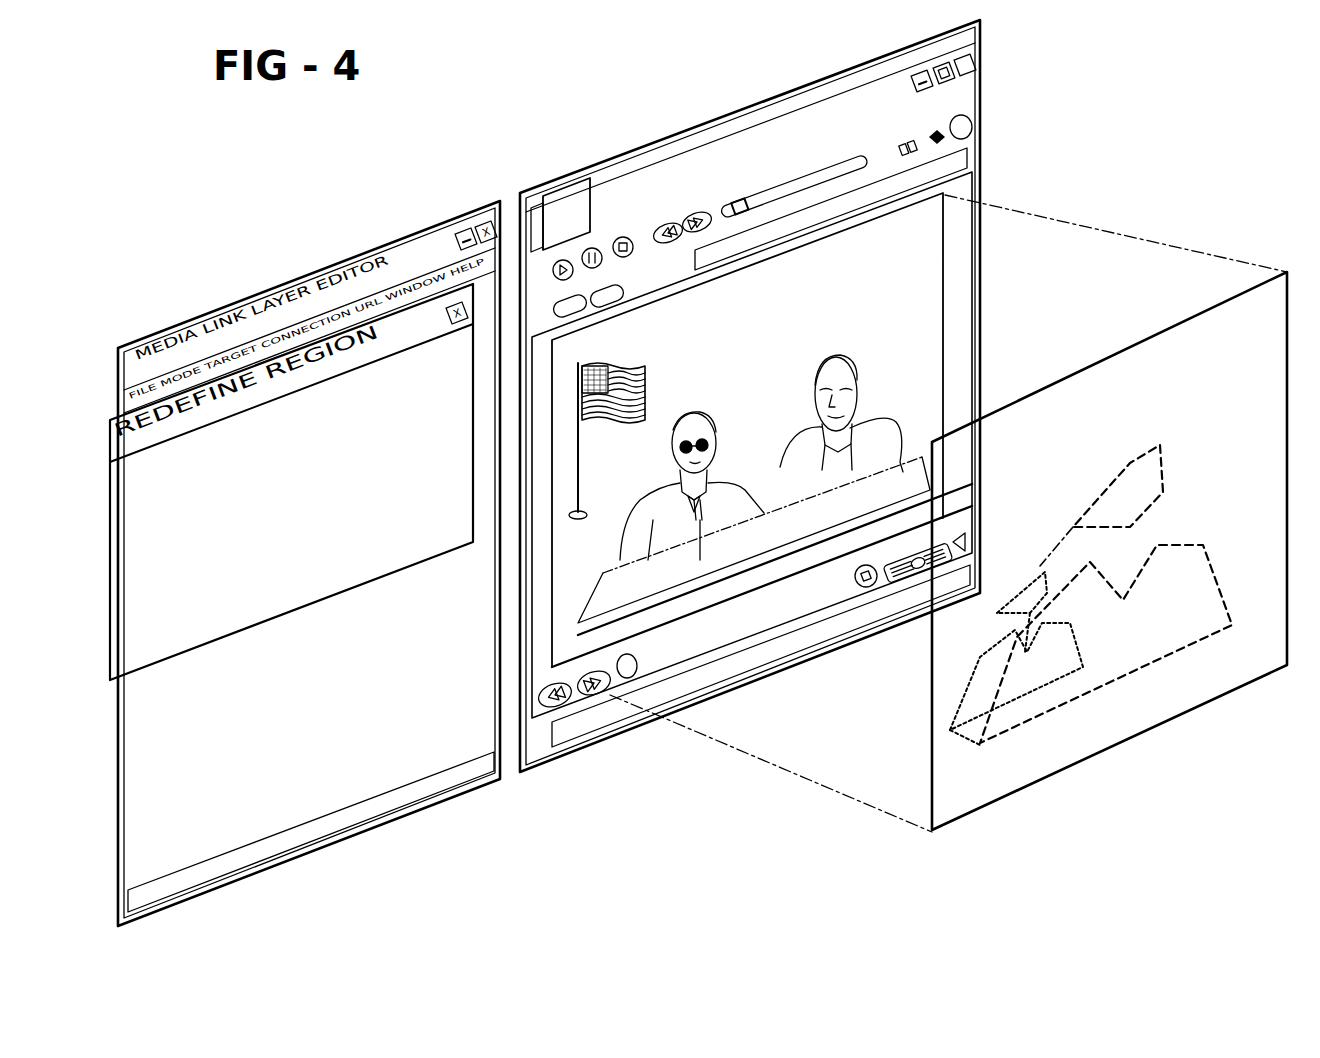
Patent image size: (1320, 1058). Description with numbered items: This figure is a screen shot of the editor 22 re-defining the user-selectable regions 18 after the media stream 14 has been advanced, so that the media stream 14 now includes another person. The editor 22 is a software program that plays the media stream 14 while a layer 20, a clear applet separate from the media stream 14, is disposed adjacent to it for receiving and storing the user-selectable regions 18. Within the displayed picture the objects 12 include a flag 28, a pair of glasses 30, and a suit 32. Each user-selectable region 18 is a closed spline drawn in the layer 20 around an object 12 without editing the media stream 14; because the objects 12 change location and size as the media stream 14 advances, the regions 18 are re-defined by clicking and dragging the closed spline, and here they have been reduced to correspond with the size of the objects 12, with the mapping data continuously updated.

The object 12 is at (753, 357).
The media stream 14 is at (950, 224).
The user-selectable regions 18 is at (1130, 463).
The layer 20 is at (1220, 304).
The editor 22 is at (531, 163).
The flag 28 is at (620, 368).
The pair of glasses 30 is at (720, 433).
The suit 32 is at (657, 490).